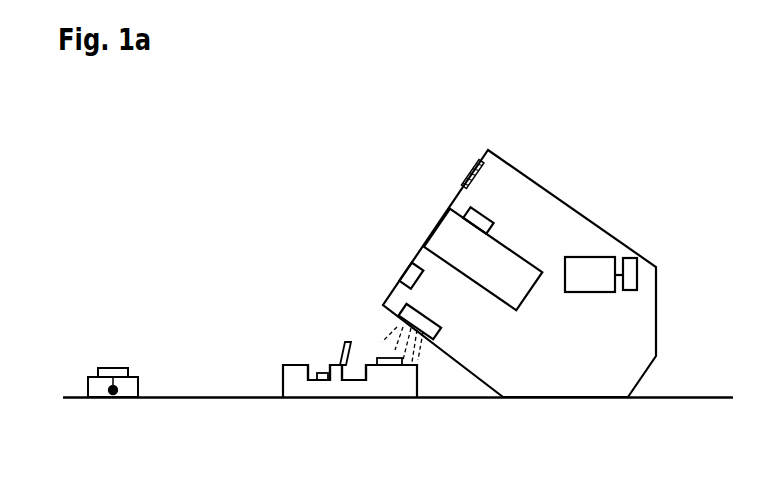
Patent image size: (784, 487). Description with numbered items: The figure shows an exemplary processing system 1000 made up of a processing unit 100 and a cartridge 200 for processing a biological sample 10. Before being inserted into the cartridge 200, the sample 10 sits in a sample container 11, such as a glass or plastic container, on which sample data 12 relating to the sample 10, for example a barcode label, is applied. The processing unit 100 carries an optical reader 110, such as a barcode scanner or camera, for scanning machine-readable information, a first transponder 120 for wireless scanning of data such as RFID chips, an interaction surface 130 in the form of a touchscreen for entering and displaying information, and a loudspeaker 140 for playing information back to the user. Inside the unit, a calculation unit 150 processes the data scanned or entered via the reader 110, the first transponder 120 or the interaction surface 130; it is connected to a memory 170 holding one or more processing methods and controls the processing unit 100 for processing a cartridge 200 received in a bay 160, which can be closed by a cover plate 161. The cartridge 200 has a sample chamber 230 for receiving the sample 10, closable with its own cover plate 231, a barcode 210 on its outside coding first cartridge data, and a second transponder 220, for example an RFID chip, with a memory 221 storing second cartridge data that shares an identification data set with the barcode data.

The processing system 1000 is at (308, 165).
The processing unit 100 is at (644, 148).
The optical reader 110 is at (406, 312).
The first transponder 120 is at (482, 220).
The interaction surface 130 is at (473, 174).
The loudspeaker 140 is at (408, 271).
The calculation unit 150 is at (603, 262).
The bay 160 is at (527, 267).
The cover plate of the bay 161 is at (441, 232).
The memory 170 is at (637, 278).
The cartridge 200 is at (256, 356).
The barcode 210 is at (396, 366).
The second transponder 220 is at (312, 364).
The memory 221 is at (322, 380).
The sample chamber 230 is at (358, 378).
The cover plate of the sample chamber 231 is at (343, 343).
The biological sample 10 is at (114, 368).
The sample container 11 is at (70, 378).
The sample data 12 is at (123, 364).